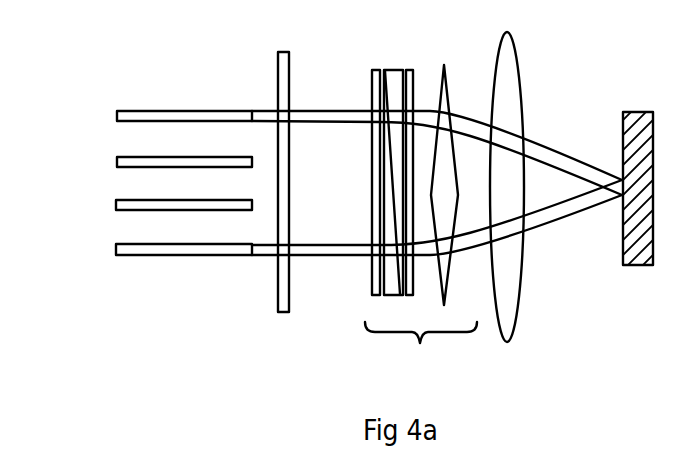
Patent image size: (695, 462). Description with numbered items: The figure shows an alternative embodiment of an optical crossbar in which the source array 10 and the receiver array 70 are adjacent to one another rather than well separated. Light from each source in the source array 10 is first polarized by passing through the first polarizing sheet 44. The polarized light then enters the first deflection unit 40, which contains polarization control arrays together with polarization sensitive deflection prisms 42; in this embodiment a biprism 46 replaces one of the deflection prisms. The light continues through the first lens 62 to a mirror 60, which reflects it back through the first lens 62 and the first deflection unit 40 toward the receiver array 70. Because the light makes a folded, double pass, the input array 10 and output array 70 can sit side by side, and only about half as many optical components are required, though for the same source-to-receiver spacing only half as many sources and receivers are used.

The source array 10 is at (142, 129).
The receiver array 70 is at (142, 237).
The first polarizing sheet 44 is at (279, 216).
The first deflection unit 40 is at (421, 204).
The polarization sensitive deflection prisms 42 is at (392, 160).
The biprism 46 is at (443, 165).
The first lens 62 is at (507, 211).
The mirror 60 is at (634, 207).